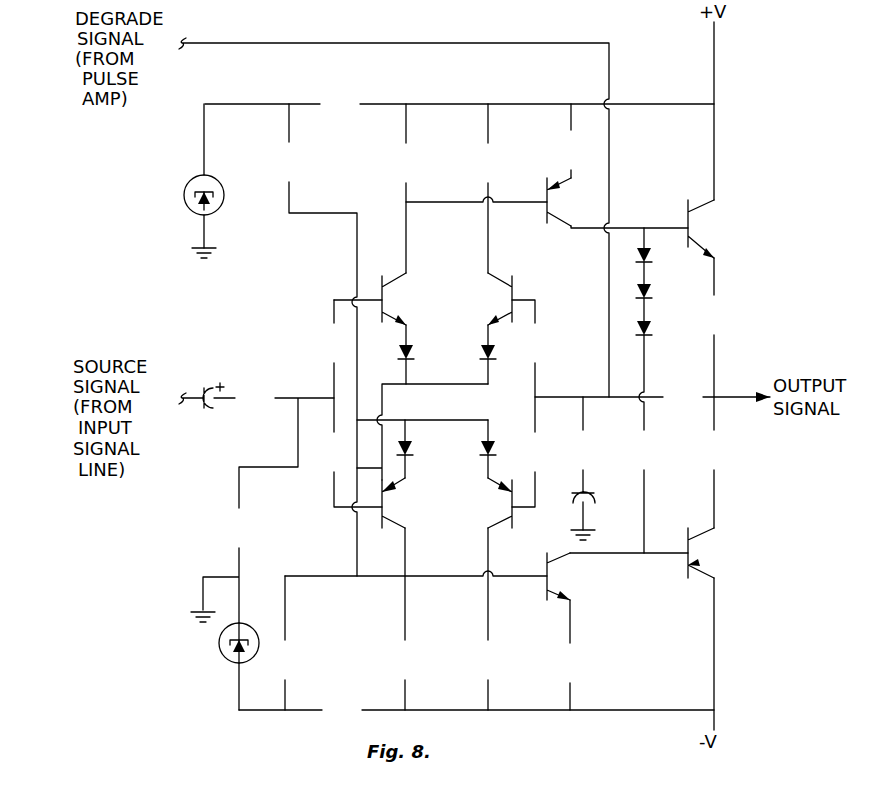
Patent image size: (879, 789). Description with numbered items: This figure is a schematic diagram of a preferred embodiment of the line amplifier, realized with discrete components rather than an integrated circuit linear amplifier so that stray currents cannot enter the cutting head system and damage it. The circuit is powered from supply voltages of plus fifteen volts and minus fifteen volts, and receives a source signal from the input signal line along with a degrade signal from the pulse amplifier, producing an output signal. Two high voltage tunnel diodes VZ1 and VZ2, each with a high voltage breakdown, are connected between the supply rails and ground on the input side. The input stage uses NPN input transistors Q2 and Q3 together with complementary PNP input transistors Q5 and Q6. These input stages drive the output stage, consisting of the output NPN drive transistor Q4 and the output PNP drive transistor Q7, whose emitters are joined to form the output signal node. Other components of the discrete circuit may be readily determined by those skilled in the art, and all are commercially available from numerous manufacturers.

The NPN input transistor Q2 is at (399, 299).
The NPN input transistor Q3 is at (495, 299).
The output NPN drive transistor Q4 is at (708, 229).
The PNP input transistor Q5 is at (399, 503).
The PNP input transistor Q6 is at (492, 503).
The output PNP drive transistor Q7 is at (707, 553).
The high voltage tunnel diode VZ1 is at (218, 181).
The high voltage tunnel diode VZ2 is at (218, 648).